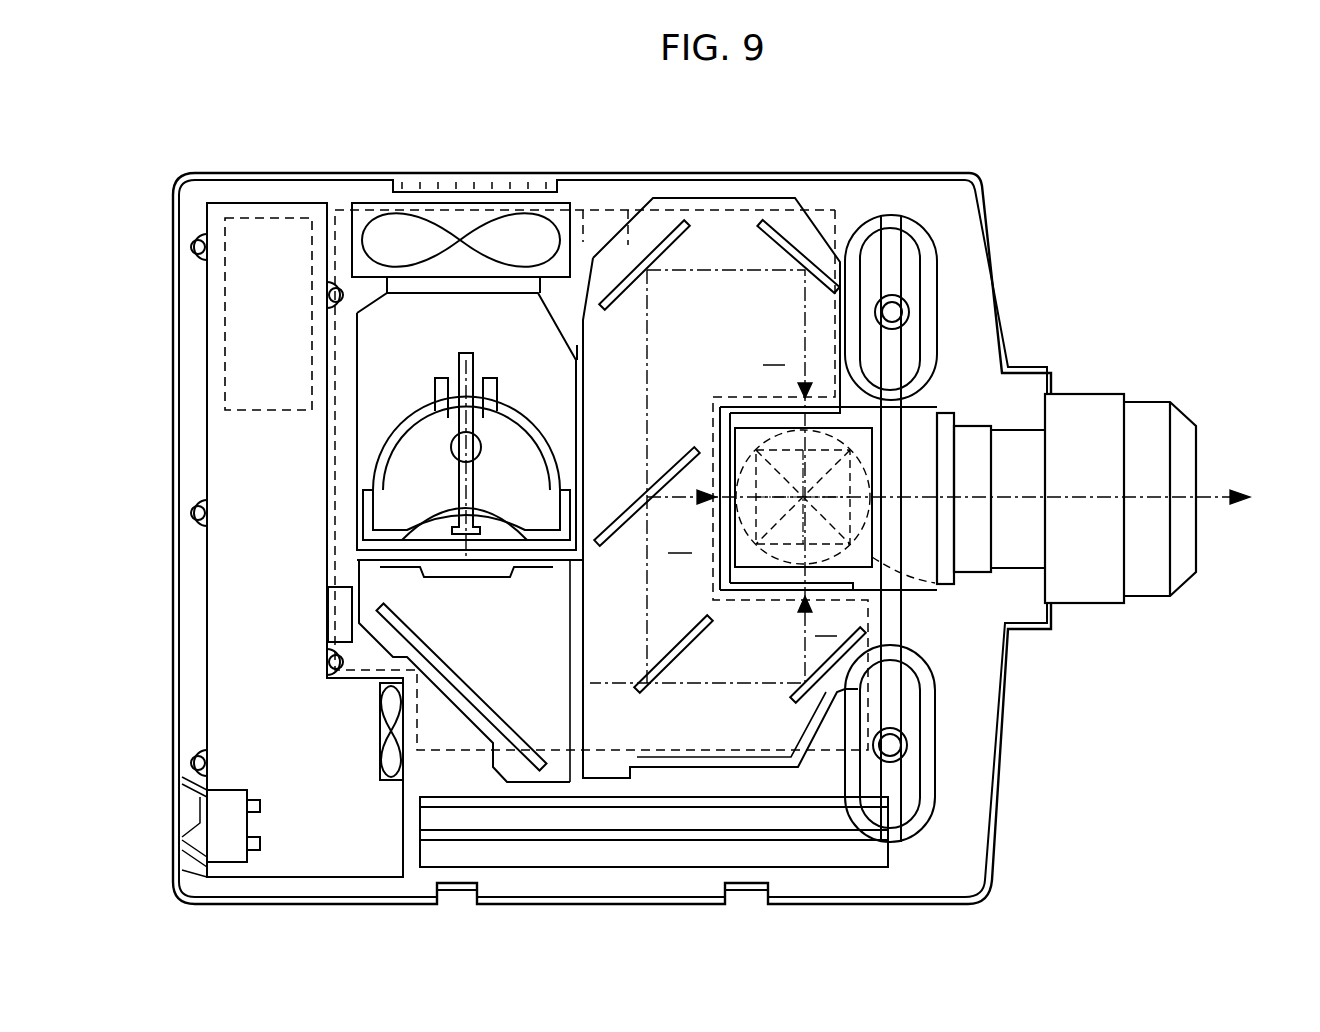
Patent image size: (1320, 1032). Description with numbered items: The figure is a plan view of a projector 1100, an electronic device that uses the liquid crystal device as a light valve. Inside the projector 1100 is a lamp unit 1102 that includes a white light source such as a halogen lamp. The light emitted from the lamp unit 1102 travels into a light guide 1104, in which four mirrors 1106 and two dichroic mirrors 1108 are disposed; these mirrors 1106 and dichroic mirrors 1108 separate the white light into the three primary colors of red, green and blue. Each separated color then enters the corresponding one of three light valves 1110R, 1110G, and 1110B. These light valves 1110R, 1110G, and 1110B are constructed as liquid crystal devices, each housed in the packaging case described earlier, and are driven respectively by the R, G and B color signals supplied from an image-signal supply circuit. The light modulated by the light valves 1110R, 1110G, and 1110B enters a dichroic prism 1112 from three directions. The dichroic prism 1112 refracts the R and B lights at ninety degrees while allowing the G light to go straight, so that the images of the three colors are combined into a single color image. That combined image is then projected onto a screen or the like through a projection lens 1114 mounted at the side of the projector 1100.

The projector 1100 is at (1002, 178).
The lamp unit 1102 is at (518, 333).
The light guide 1104 is at (640, 215).
The mirror 1106 is at (773, 245).
The dichroic mirror 1108 is at (637, 517).
The light valve 1110R is at (762, 403).
The light valve 1110G is at (723, 462).
The light valve 1110B is at (757, 592).
The dichroic prism 1112 is at (944, 592).
The projection lens 1114 is at (1158, 410).